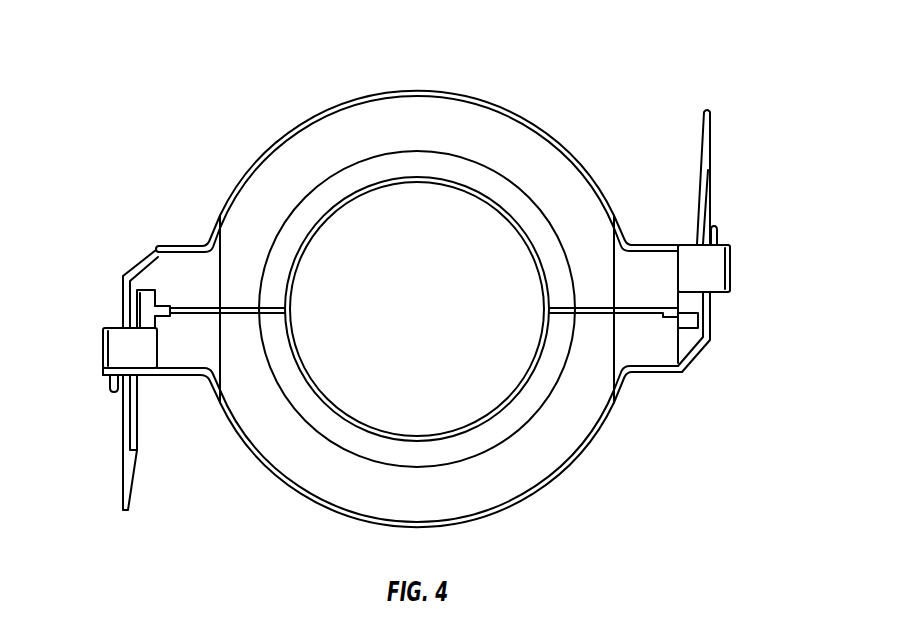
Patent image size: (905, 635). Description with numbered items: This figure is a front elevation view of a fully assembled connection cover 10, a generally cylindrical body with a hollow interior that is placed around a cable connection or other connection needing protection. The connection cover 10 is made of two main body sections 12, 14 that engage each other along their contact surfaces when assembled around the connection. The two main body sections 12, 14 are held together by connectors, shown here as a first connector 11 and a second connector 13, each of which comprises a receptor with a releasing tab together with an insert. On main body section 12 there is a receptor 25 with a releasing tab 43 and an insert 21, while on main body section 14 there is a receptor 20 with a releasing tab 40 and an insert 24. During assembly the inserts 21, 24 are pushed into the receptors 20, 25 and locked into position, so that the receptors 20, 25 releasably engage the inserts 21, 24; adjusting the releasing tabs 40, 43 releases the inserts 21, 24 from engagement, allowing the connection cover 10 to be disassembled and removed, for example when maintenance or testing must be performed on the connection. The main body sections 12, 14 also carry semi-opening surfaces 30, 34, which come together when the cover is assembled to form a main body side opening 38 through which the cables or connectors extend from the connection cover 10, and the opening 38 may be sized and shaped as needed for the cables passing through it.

The connection cover 10 is at (733, 65).
The first connector 11 is at (727, 305).
The main body section 12 is at (473, 92).
The second connector 13 is at (102, 314).
The main body section 14 is at (360, 526).
The receptor 20 is at (105, 343).
The insert 21 is at (123, 467).
The insert 24 is at (713, 152).
The receptor 25 is at (731, 272).
The semi-opening surface 30 is at (498, 206).
The semi-opening surface 34 is at (337, 408).
The main body side opening 38 is at (461, 397).
The releasing tab 40 is at (117, 390).
The releasing tab 43 is at (720, 231).